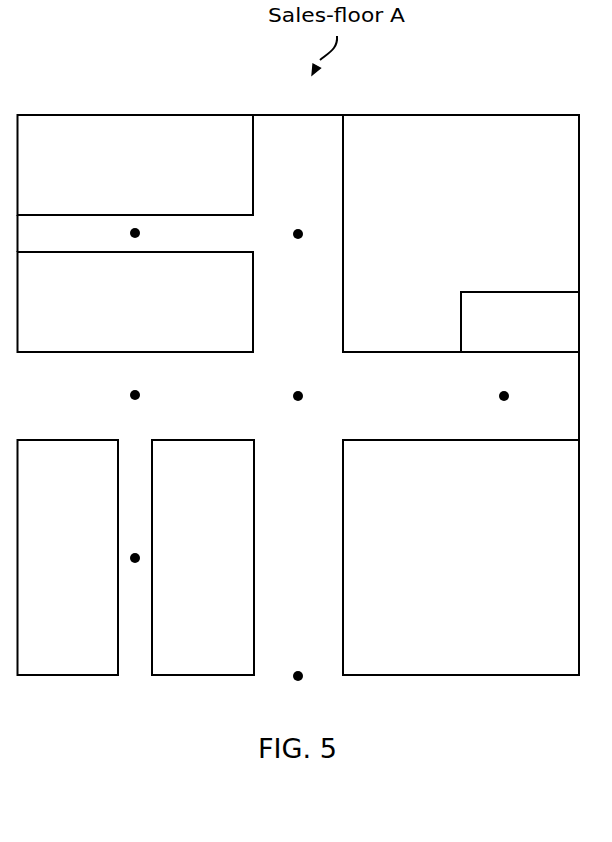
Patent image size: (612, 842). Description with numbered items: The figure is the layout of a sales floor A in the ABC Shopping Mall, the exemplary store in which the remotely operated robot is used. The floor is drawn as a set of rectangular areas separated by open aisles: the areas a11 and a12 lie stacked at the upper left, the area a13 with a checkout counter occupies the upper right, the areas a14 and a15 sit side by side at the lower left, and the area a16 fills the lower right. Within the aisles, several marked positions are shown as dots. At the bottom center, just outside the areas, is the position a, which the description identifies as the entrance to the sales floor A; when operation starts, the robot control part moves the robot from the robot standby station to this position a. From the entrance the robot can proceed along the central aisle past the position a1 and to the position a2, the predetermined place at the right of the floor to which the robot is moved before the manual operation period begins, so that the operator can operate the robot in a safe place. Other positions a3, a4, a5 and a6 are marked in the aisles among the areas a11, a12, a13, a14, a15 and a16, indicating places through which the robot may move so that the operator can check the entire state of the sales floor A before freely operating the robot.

The sales area a11 is at (136, 165).
The sales area a12 is at (136, 283).
The sales area a13 with checkout a13 is at (461, 233).
The sales area a14 is at (68, 557).
The sales area a15 is at (203, 557).
The sales area a16 is at (461, 557).
The location point a1 is at (314, 396).
The position a2 is at (520, 396).
The location point a3 is at (152, 396).
The location point a4 is at (135, 576).
The location point a5 is at (298, 252).
The location point a6 is at (152, 233).
The position a is at (297, 693).